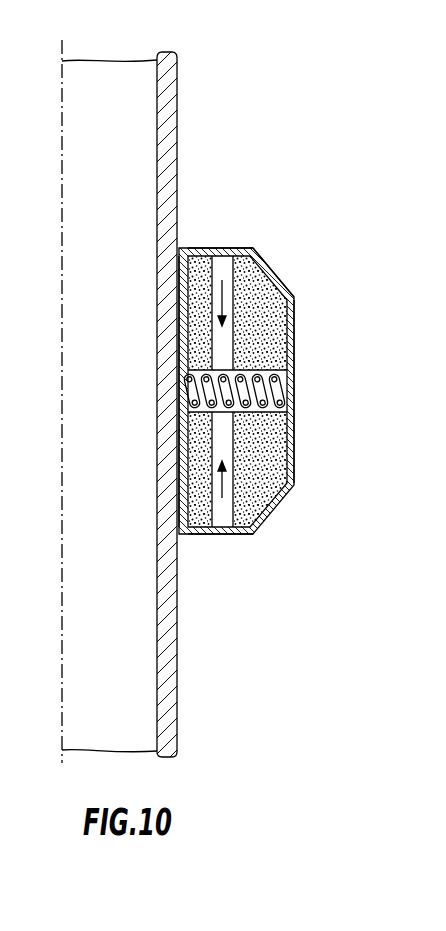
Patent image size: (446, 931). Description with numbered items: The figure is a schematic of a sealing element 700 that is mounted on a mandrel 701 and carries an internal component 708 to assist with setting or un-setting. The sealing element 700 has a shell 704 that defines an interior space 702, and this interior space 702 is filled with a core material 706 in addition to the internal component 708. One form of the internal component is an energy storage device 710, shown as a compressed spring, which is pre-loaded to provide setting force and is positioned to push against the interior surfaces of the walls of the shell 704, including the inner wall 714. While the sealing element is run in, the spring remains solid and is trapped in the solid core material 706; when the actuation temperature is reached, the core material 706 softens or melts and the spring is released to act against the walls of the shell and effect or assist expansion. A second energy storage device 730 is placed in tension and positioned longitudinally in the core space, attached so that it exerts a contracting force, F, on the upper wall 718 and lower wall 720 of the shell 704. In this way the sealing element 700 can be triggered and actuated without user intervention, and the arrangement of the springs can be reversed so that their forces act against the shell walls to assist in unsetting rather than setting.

The sealing element 700 is at (223, 388).
The mandrel 701 is at (157, 196).
The interior space 702 is at (262, 443).
The shell 704 is at (294, 468).
The core material 706 is at (292, 312).
The internal component 708 is at (294, 386).
The energy storage device 710 is at (285, 344).
The inner wall 714 is at (186, 312).
The upper wall 718 is at (228, 247).
The lower wall 720 is at (246, 536).
The energy storage device 730 is at (237, 300).